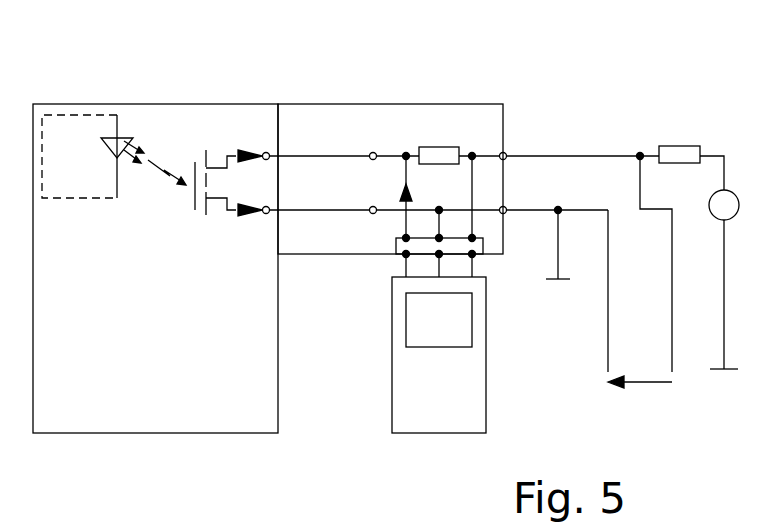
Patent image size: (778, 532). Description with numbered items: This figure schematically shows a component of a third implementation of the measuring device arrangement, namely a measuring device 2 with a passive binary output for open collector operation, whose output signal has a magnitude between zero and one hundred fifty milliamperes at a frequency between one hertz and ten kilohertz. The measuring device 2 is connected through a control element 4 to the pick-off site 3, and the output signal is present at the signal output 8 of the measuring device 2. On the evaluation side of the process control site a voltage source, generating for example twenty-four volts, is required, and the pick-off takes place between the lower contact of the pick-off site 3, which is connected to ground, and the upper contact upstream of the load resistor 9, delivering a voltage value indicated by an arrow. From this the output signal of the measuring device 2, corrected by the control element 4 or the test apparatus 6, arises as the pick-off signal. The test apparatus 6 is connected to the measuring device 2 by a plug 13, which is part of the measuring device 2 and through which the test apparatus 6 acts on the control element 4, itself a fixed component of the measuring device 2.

The measuring device 2 is at (257, 421).
The pick-off site 3 is at (524, 183).
The control element 4 is at (437, 160).
The test apparatus 6 is at (398, 297).
The signal output 8 is at (297, 187).
The load resistor 9 is at (675, 152).
The plug 13 is at (484, 255).